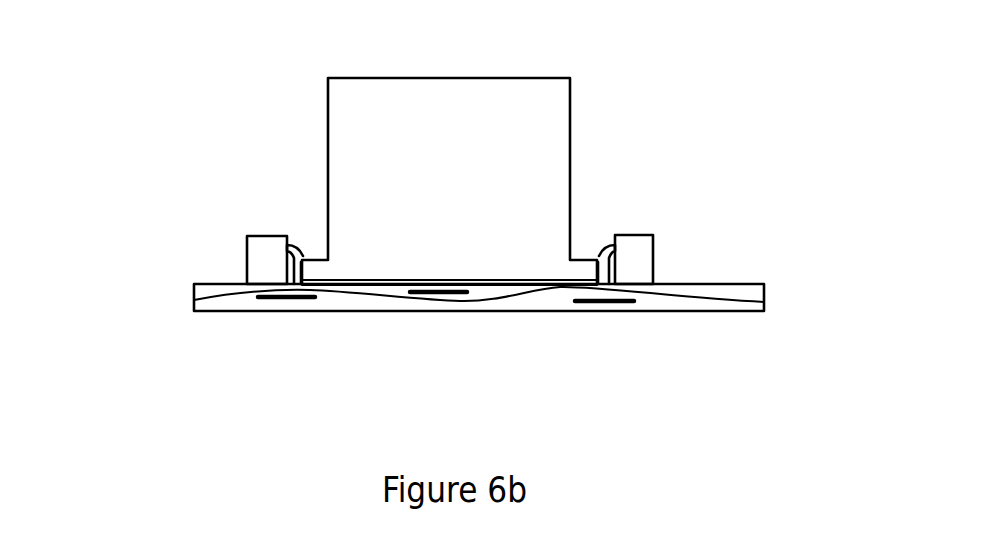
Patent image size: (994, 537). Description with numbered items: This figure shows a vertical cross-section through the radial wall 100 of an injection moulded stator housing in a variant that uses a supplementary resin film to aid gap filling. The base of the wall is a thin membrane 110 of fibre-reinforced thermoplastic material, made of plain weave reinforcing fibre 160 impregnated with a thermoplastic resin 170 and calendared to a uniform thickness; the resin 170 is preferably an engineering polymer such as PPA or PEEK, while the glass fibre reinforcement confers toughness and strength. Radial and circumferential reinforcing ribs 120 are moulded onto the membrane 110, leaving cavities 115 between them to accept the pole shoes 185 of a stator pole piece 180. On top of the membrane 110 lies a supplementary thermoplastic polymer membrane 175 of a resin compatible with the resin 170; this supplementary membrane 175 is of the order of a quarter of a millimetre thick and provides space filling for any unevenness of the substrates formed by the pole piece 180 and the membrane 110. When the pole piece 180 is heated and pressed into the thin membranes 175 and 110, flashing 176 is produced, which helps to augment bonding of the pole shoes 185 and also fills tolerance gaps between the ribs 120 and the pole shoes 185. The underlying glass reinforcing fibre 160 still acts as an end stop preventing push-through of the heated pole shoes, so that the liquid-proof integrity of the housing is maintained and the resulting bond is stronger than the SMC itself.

The radial wall 100 is at (186, 354).
The membrane 110 is at (237, 312).
The cavities 115 is at (583, 245).
The reinforcing ribs 120 is at (645, 255).
The reinforcing fibre 160 is at (233, 293).
The thermoplastic resin 170 is at (662, 300).
The supplementary thermoplastic polymer membrane 175 is at (487, 282).
The flashing 176 is at (300, 245).
The stator pole piece 180 is at (398, 113).
The pole shoes 185 is at (585, 270).